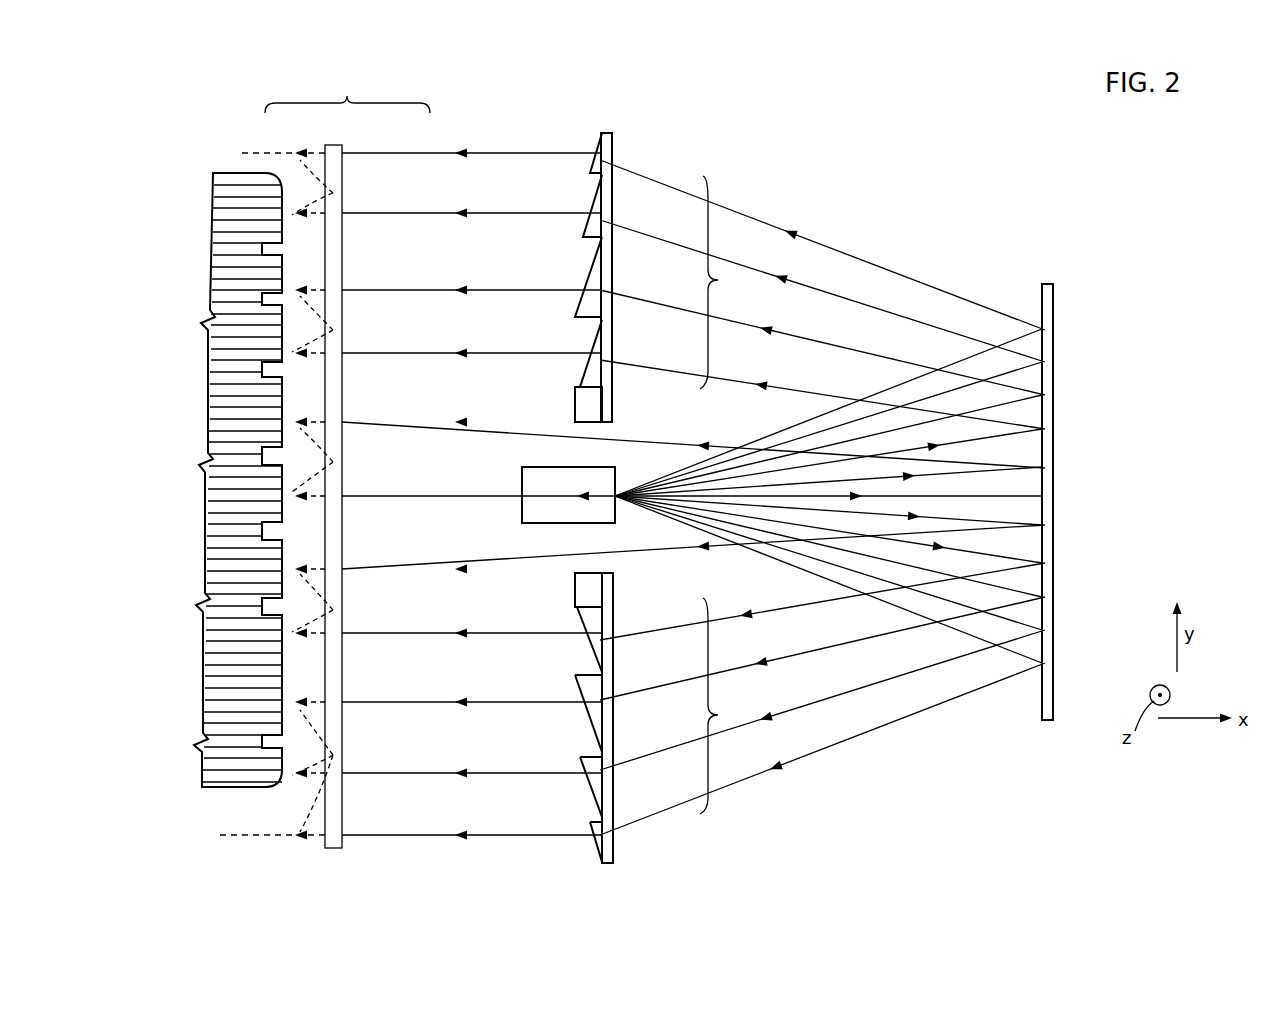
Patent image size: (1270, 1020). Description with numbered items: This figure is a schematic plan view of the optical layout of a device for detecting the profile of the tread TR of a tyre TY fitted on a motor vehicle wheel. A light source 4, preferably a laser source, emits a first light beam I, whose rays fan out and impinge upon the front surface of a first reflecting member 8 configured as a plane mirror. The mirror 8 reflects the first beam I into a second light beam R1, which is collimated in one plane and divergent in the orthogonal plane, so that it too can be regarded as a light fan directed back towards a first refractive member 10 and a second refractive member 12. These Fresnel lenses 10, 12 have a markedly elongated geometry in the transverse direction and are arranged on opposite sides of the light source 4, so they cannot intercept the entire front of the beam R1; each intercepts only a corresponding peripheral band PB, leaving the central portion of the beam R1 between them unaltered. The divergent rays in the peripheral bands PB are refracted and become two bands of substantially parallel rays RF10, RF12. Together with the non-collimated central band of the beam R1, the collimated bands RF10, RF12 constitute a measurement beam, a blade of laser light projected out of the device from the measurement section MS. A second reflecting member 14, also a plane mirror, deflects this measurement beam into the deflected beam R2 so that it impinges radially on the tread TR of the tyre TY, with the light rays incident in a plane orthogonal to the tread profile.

The light source 4 is at (531, 472).
The first reflecting member 8 is at (1055, 298).
The first refractive member 10 is at (619, 850).
The second refractive member 12 is at (616, 140).
The second reflecting member 14 is at (343, 800).
The measurement section MS is at (347, 92).
The peripheral band PB is at (718, 280).
The second light beam R1 is at (835, 345).
The deflected beam R2 is at (333, 193).
The collimated band of rays RF12 is at (522, 350).
The collimated band of rays RF10 is at (522, 830).
The first light beam I is at (785, 469).
The tyre TY is at (225, 515).
The tread TR is at (288, 745).